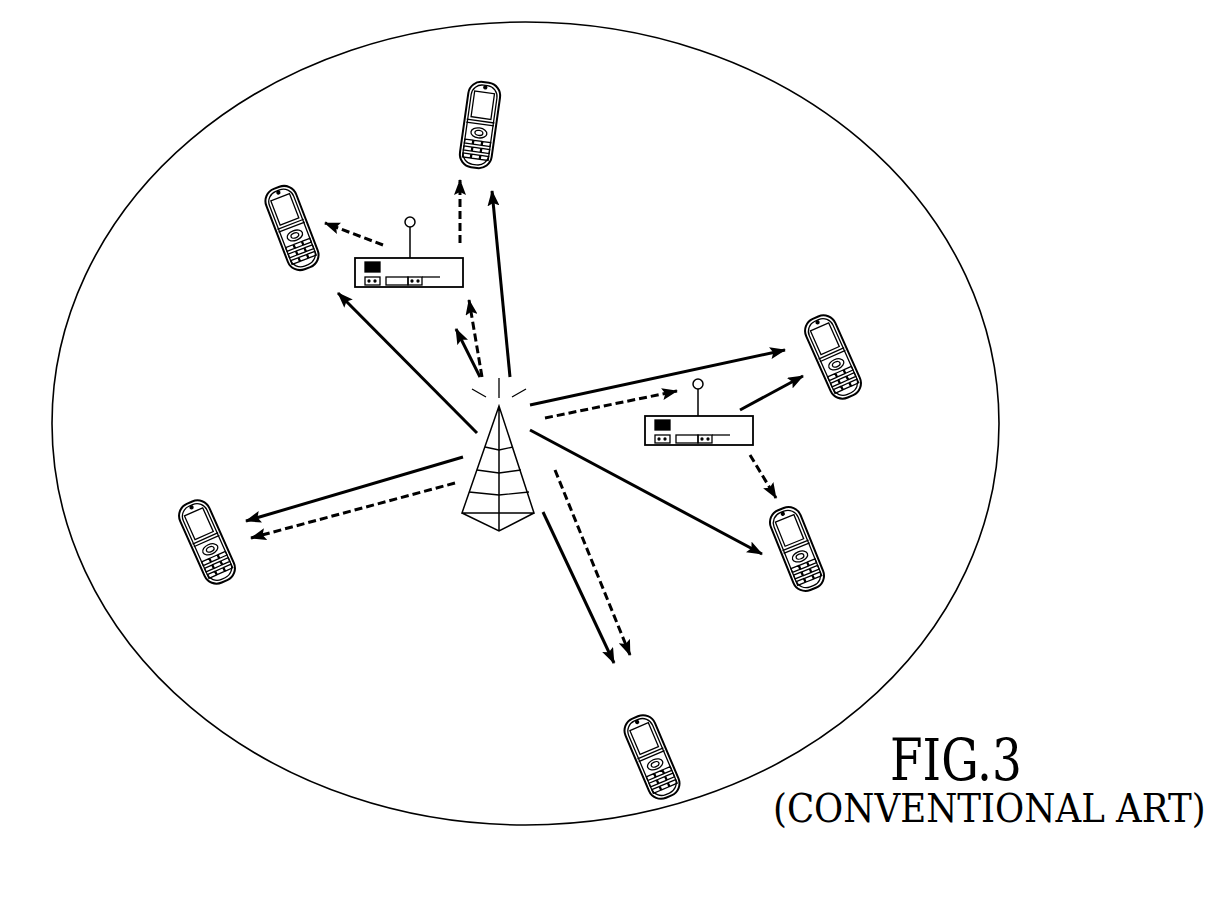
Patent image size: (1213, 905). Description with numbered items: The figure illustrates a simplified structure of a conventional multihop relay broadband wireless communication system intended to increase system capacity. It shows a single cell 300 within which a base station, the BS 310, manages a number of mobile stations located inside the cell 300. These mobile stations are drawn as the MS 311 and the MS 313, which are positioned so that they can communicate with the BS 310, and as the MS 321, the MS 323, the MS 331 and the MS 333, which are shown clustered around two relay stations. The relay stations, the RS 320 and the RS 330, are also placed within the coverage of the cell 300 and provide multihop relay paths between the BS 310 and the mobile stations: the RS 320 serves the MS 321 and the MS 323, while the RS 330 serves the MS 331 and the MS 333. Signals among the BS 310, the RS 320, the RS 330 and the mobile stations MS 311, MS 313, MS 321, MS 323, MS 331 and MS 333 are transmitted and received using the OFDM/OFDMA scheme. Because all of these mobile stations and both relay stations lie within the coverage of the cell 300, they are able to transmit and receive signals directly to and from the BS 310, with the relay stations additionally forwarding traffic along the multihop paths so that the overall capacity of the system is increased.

The cell 300 is at (525, 423).
The BS 310 is at (497, 472).
The MS 311 is at (195, 502).
The MS 313 is at (641, 718).
The RS 320 is at (699, 429).
The MS 321 is at (821, 316).
The MS 323 is at (784, 508).
The RS 330 is at (409, 269).
The MS 331 is at (278, 185).
The MS 333 is at (485, 82).